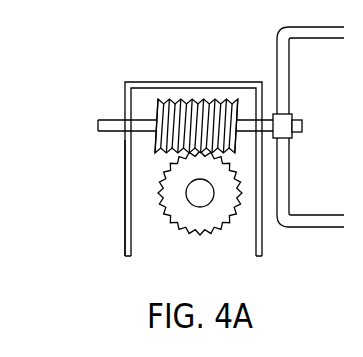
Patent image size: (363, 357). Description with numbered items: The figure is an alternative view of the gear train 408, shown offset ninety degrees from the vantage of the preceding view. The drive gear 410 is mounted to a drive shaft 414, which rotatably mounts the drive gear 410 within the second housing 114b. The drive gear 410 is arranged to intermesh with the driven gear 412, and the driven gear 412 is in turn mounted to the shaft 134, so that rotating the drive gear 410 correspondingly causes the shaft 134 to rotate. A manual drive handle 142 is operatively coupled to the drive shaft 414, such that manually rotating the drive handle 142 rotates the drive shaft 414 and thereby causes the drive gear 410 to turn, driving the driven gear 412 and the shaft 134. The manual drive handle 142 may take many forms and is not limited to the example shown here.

The gear train 408 is at (171, 80).
The drive gear 410 is at (201, 107).
The driven gear 412 is at (180, 214).
The drive shaft 414 is at (108, 120).
The shaft 134 is at (187, 192).
The manual drive handle 142 is at (295, 168).
The second housing 114b is at (124, 156).